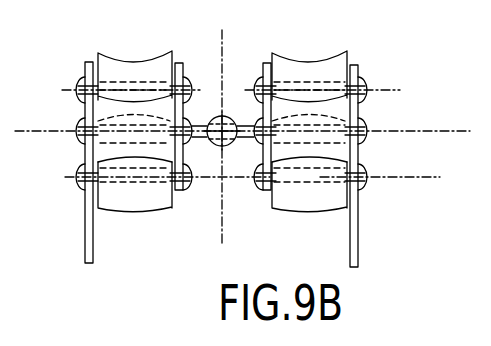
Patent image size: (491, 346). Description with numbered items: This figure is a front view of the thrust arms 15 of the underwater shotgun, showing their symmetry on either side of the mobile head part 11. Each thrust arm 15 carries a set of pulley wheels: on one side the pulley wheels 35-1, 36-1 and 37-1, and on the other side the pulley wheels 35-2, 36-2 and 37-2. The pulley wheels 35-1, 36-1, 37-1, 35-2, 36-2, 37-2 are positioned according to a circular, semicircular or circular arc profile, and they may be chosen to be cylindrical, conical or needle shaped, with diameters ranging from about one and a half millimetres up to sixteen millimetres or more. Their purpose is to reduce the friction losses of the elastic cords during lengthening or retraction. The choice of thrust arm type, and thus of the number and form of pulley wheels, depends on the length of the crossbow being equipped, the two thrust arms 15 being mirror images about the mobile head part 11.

The mobile head part 11 is at (225, 113).
The thrust arm 15 is at (88, 247).
The pulley wheel 35-1 is at (330, 66).
The pulley wheel 35-2 is at (132, 64).
The pulley wheel 36-1 is at (352, 112).
The pulley wheel 36-2 is at (100, 155).
The pulley wheel 37-1 is at (342, 203).
The pulley wheel 37-2 is at (128, 196).